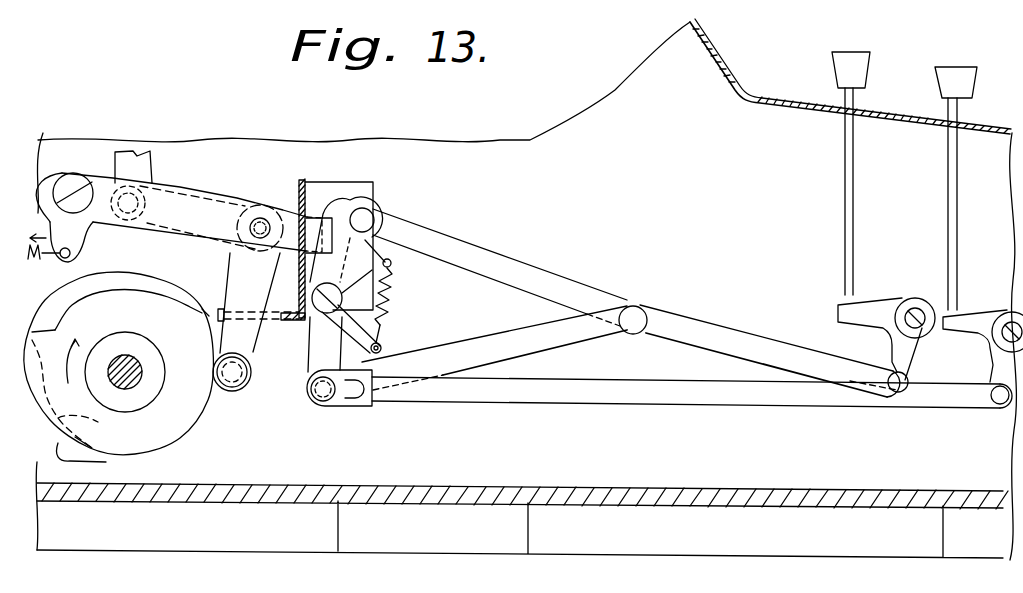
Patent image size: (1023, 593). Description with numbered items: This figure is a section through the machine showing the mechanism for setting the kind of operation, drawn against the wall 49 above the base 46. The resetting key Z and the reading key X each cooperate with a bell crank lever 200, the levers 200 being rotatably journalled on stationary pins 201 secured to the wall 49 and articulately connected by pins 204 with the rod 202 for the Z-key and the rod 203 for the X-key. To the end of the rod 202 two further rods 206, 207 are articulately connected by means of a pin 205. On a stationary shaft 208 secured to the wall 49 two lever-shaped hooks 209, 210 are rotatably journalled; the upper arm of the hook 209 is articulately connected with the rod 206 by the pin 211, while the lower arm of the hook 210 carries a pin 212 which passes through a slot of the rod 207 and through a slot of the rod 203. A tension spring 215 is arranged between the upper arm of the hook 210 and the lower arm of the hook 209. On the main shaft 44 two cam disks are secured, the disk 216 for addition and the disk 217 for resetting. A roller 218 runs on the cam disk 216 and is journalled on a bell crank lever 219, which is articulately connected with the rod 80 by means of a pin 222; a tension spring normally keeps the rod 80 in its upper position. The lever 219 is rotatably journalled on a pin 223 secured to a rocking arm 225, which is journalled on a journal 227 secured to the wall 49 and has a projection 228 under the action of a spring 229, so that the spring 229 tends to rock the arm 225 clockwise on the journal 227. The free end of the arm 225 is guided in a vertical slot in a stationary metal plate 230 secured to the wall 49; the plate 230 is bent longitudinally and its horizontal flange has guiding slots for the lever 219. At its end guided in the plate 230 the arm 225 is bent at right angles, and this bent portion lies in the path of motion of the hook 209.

The main shaft 44 is at (127, 370).
The base frame 46 is at (664, 493).
The wall 49 is at (532, 147).
The rod 80 is at (137, 157).
The bell crank lever 200 is at (860, 310).
The stationary pin 201 is at (997, 343).
The rod 202 is at (693, 320).
The rod 203 is at (775, 397).
The pin 204 is at (910, 408).
The pin 205 is at (636, 310).
The rod 206 is at (460, 253).
The rod 207 is at (493, 343).
The stationary shaft 208 is at (392, 292).
The lever-shaped hook 209 is at (323, 180).
The lever-shaped hook 210 is at (377, 250).
The pin 211 is at (365, 180).
The pin 212 is at (318, 406).
The tension spring 215 is at (385, 333).
The cam disk 216 is at (102, 462).
The cam disk 217 is at (117, 270).
The roller 218 is at (220, 393).
The bell crank lever 219 is at (230, 274).
The pin 222 is at (150, 198).
The pin 223 is at (260, 222).
The rocking arm 225 is at (200, 190).
The journal 227 is at (68, 180).
The projection 228 is at (50, 245).
The spring 229 is at (48, 262).
The stationary metal plate 230 is at (300, 264).